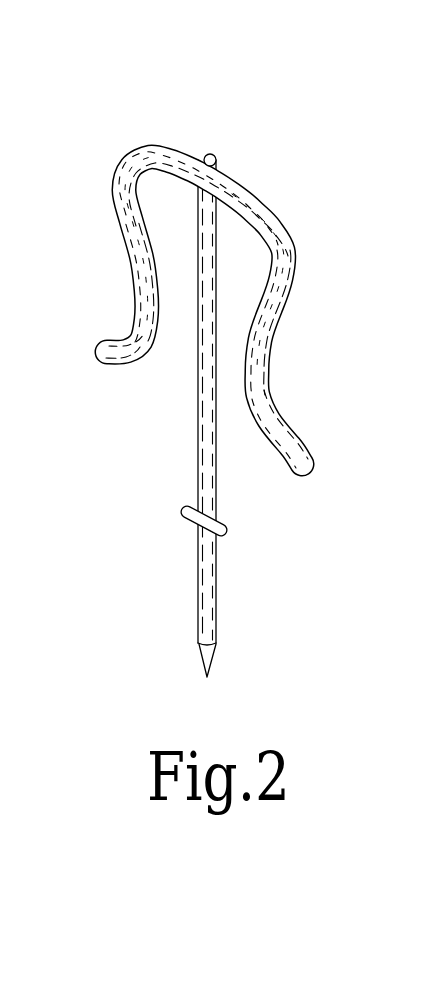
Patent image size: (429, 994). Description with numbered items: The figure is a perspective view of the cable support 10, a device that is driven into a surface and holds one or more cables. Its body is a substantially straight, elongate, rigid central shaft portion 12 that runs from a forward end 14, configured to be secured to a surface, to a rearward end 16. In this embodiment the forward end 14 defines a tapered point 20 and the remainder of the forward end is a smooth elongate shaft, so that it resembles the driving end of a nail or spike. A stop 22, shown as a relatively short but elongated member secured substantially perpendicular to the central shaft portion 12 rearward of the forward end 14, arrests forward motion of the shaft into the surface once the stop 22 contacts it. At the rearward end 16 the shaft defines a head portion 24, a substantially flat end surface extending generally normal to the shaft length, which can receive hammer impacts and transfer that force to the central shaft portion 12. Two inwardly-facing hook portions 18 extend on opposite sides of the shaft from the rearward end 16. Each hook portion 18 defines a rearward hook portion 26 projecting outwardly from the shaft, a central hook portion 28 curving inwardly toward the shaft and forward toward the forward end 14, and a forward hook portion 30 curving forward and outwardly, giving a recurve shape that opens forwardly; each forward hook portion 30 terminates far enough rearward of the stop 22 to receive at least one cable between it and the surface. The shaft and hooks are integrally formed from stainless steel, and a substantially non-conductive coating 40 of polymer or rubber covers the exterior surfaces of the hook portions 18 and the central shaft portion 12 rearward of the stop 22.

The cable support 10 is at (215, 108).
The central shaft portion 12 is at (238, 494).
The forward end 14 is at (243, 588).
The rearward end 16 is at (230, 158).
The hook portion 18 is at (118, 161).
The tapered point 20 is at (207, 653).
The stop 22 is at (186, 512).
The head portion 24 is at (219, 152).
The rearward hook portion 26 is at (190, 141).
The central hook portion 28 is at (130, 252).
The forward hook portion 30 is at (112, 340).
The coating 40 is at (208, 402).